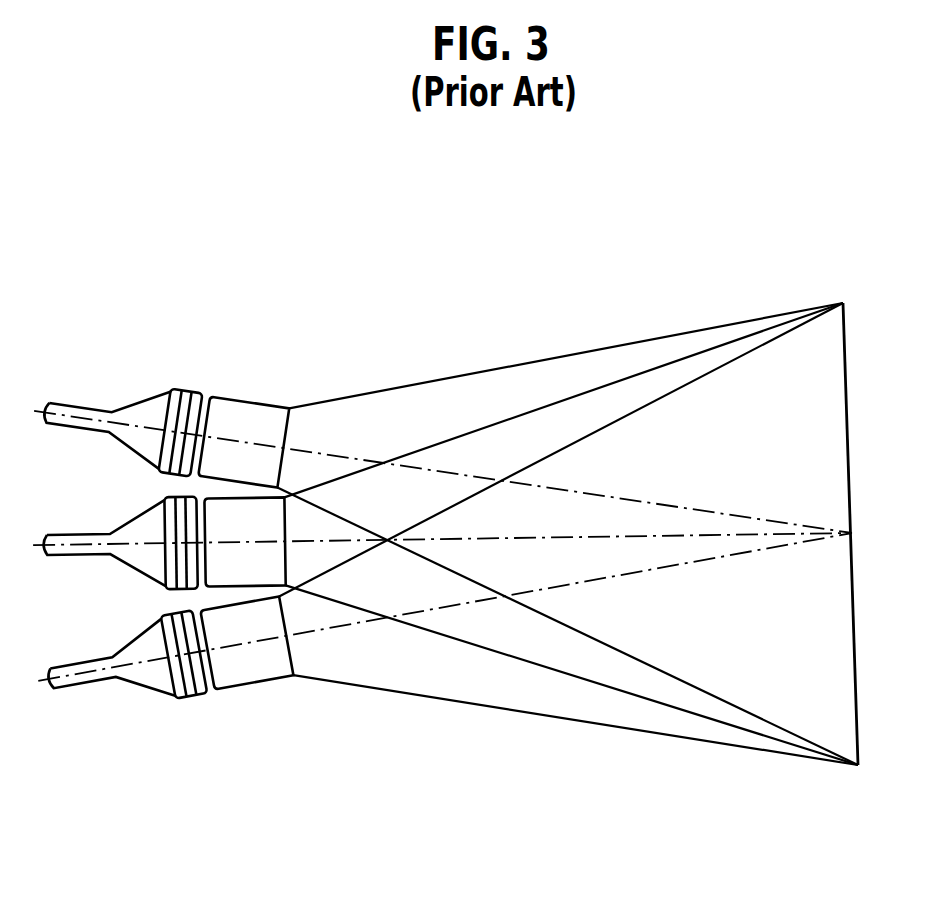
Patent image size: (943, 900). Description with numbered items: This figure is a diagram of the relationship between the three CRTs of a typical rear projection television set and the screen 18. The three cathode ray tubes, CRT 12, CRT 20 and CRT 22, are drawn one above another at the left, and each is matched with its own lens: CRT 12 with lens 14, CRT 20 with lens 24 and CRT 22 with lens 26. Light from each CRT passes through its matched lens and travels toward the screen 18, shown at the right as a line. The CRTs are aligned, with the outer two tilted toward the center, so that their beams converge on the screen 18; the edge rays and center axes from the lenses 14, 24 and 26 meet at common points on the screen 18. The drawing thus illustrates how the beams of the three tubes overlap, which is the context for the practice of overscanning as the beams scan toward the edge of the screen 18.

The CRT 12 is at (162, 700).
The lens 14 is at (260, 690).
The screen 18 is at (850, 463).
The CRT 20 is at (140, 568).
The CRT 22 is at (167, 390).
The lens 24 is at (209, 499).
The lens 26 is at (261, 404).